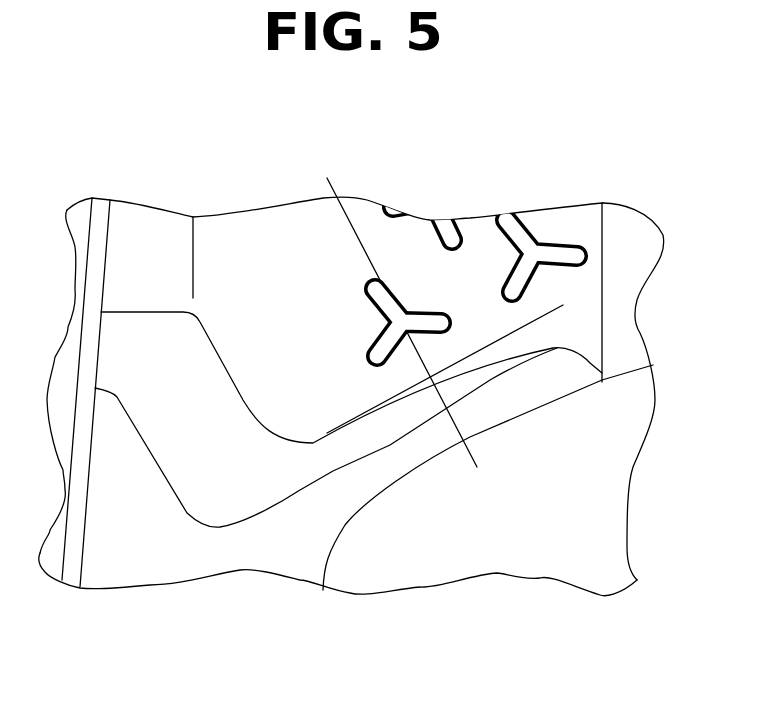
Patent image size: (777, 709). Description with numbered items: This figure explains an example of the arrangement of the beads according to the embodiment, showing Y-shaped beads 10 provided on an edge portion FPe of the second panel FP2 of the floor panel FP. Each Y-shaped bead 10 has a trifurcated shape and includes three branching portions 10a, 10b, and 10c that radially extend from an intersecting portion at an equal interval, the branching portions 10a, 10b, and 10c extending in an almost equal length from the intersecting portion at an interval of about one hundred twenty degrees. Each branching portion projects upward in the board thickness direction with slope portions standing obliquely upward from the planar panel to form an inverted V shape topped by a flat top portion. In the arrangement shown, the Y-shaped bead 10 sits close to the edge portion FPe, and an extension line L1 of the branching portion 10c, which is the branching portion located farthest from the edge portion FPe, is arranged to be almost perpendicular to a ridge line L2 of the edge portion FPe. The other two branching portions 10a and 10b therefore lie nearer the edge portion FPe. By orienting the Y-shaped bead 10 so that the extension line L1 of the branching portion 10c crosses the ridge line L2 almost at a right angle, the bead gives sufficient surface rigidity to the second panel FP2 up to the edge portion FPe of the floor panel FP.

The Y-shaped bead 10 is at (358, 325).
The branching portion 10a is at (370, 368).
The branching portion 10b is at (457, 318).
The branching portion 10c is at (385, 275).
The floor panel FP is at (280, 277).
The second panel FP2 is at (397, 292).
The edge portion FPe is at (475, 373).
The extension line L1 is at (353, 220).
The ridge line L2 is at (540, 318).